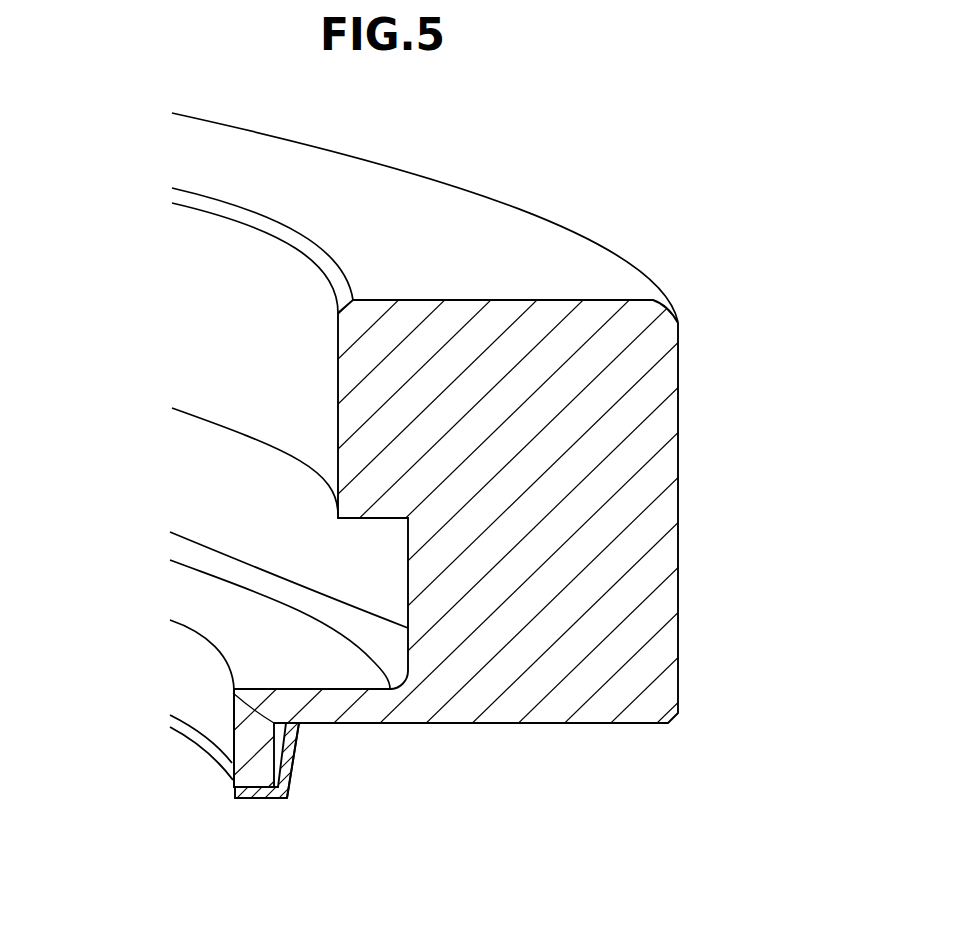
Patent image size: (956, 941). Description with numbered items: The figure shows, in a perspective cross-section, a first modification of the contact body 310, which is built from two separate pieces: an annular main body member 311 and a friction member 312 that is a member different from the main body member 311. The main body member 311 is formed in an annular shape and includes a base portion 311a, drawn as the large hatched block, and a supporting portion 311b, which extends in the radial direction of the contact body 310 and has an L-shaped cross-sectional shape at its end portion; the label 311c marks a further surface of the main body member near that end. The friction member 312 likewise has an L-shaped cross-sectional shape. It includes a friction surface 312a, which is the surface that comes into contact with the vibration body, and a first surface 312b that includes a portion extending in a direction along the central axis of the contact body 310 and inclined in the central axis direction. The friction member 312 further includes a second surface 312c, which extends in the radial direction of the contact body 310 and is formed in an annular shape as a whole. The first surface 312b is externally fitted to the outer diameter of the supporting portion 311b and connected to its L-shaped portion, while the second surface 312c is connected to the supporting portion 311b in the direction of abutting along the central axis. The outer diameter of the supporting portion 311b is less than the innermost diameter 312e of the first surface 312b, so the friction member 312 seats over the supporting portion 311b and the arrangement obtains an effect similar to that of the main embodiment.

The contact body 310 is at (382, 470).
The main body member 311 is at (382, 470).
The base portion 311a is at (512, 703).
The supporting portion 311b is at (363, 713).
The inner side surface of frame 311c is at (233, 693).
The friction member 312 is at (228, 781).
The friction surface 312a is at (240, 799).
The first surface 312b is at (278, 755).
The second surface 312c is at (257, 779).
The innermost diameter of the first surface 312e is at (273, 799).